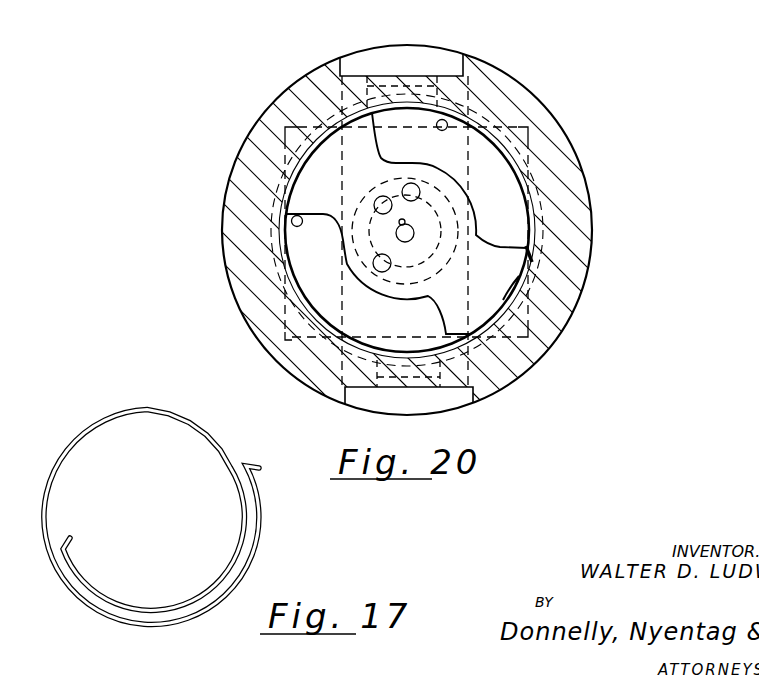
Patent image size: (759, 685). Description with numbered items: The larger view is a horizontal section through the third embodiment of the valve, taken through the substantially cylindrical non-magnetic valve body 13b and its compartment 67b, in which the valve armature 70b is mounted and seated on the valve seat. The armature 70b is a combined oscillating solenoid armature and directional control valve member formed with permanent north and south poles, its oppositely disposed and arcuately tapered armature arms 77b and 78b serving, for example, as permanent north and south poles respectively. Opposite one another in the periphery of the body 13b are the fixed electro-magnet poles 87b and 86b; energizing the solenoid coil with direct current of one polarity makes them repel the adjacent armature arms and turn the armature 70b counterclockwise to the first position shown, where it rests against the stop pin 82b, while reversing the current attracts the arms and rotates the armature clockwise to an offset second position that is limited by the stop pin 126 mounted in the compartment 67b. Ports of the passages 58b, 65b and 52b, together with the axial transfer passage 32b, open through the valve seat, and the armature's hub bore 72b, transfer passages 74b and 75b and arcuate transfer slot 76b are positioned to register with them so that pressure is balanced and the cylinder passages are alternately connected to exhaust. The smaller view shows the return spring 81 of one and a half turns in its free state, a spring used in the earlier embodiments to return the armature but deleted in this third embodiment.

In FIG. 20, the valve body 13b is at (585, 178).
In FIG. 20, the pole 87b is at (433, 51).
In FIG. 20, the pole 86b is at (437, 409).
In FIG. 20, the compartment 67b is at (525, 228).
In FIG. 20, the armature arm 77b is at (305, 182).
In FIG. 20, the passage 65b is at (356, 259).
In FIG. 20, the transfer passage 74b is at (440, 170).
In FIG. 20, the valve armature 70b is at (497, 268).
In FIG. 20, the armature arm 78b is at (495, 287).
In FIG. 20, the stop pin 82b is at (291, 220).
In FIG. 20, the stop pin 126 is at (448, 121).
In FIG. 20, the arcuate transfer slot 76b is at (367, 216).
In FIG. 20, the passage 52b is at (383, 196).
In FIG. 20, the passage 58b is at (416, 196).
In FIG. 20, the axial bore 72b is at (405, 222).
In FIG. 20, the axial transfer passage 32b is at (414, 234).
In FIG. 20, the transfer passage 75b is at (391, 265).
In FIG. 17, the return spring 81 is at (214, 436).